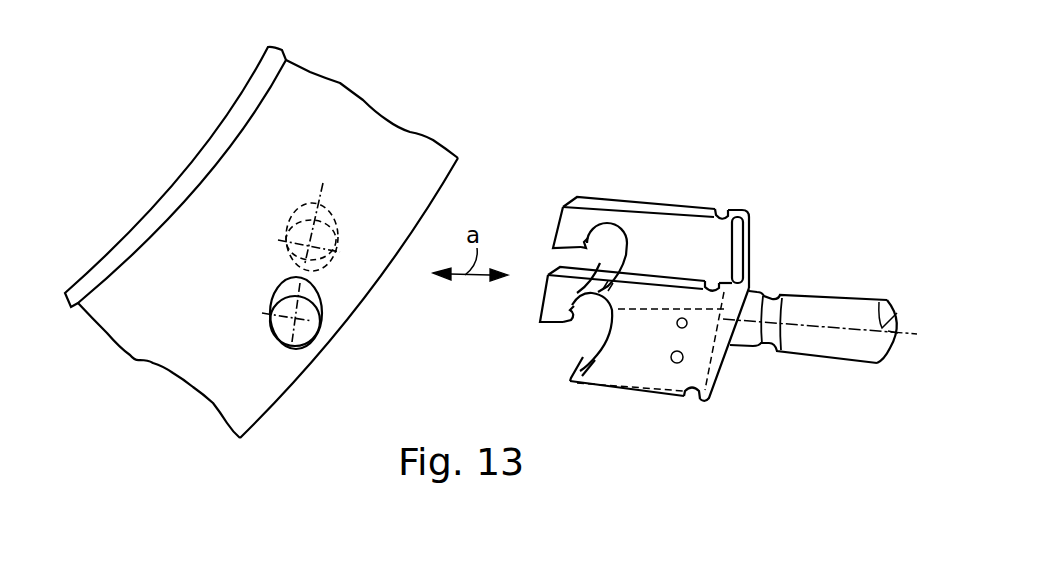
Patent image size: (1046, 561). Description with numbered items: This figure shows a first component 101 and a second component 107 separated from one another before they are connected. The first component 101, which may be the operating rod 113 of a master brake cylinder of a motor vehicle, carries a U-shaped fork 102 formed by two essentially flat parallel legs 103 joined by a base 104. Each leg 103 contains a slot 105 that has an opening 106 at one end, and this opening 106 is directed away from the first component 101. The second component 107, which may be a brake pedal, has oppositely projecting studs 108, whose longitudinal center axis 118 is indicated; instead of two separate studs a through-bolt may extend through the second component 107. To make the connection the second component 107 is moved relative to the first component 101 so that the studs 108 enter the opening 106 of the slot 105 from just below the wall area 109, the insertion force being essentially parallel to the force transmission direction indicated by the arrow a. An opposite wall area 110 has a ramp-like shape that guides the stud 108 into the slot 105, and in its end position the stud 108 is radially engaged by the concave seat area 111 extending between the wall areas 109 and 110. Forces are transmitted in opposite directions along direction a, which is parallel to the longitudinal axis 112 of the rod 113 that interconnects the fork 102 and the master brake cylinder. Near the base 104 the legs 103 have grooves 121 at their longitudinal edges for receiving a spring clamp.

The first component 101 is at (822, 295).
The U-shaped fork 102 is at (655, 200).
The legs 103 is at (697, 235).
The base 104 is at (750, 241).
The slot 105 is at (608, 232).
The opening 106 is at (607, 252).
The second component 107 is at (345, 112).
The studs 108 is at (328, 210).
The wall area 109 is at (589, 238).
The ramp-like wall area 110 is at (590, 384).
The seat area 111 is at (620, 280).
The longitudinal axis 112 is at (895, 333).
The operating rod 113 is at (813, 345).
The longitudinal center axis 118 is at (280, 282).
The grooves 121 is at (726, 211).